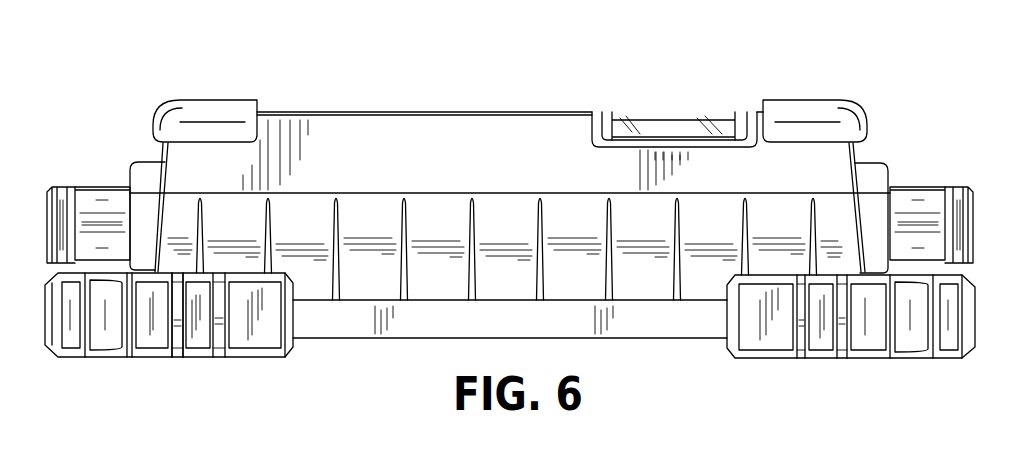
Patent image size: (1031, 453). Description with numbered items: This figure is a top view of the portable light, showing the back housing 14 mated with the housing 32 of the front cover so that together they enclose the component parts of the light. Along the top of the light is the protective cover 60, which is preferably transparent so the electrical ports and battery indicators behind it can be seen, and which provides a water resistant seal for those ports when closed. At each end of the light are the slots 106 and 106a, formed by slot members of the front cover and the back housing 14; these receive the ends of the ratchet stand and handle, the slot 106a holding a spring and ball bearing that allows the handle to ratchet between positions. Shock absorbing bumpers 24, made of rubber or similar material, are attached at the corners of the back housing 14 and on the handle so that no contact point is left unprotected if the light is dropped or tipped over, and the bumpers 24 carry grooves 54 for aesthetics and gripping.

The back housing 14 is at (437, 171).
The bumpers 24 is at (210, 112).
The housing 32 is at (520, 236).
The grooves 54 is at (220, 338).
The protective cover 60 is at (657, 112).
The slot 106 is at (100, 187).
The slot 106a is at (917, 188).